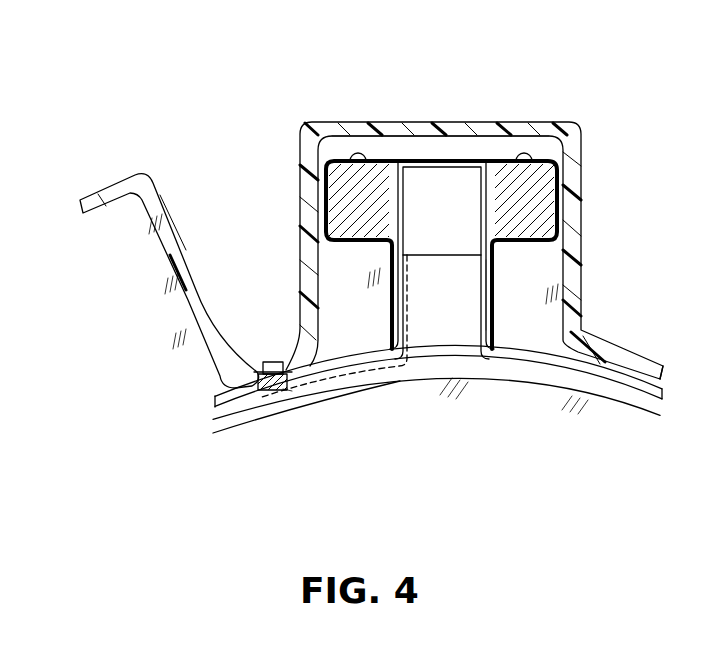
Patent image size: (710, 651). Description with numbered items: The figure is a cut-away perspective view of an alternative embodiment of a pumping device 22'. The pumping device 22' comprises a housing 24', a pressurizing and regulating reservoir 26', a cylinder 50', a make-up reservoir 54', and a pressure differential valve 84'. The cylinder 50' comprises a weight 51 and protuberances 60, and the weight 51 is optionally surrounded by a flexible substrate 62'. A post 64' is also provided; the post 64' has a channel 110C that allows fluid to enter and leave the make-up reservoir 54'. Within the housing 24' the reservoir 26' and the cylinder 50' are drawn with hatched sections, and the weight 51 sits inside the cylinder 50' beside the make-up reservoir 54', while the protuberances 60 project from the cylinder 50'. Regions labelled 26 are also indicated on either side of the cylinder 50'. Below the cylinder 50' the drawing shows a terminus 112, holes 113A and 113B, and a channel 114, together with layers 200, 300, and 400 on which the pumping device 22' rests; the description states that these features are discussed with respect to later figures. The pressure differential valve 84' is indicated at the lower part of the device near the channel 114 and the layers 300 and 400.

The pumping device 22' is at (497, 200).
The housing 24' is at (464, 220).
The side cavity 26 is at (443, 275).
The pressurizing and regulating reservoir 26' is at (440, 87).
The cylinder 50' is at (441, 205).
The weight 51 is at (344, 180).
The make-up reservoir 54' is at (496, 188).
The protuberances 60 is at (356, 150).
The flexible substrate 62' is at (569, 295).
The post 64' is at (528, 192).
The pressure differential valve 84' is at (252, 450).
The channel 110C is at (363, 372).
The terminus 112 is at (270, 375).
The hole 113A is at (258, 371).
The hole 113B is at (283, 372).
The channel 114 is at (285, 389).
The layer 200 is at (215, 355).
The layer 300 is at (217, 400).
The layer 400 is at (223, 424).